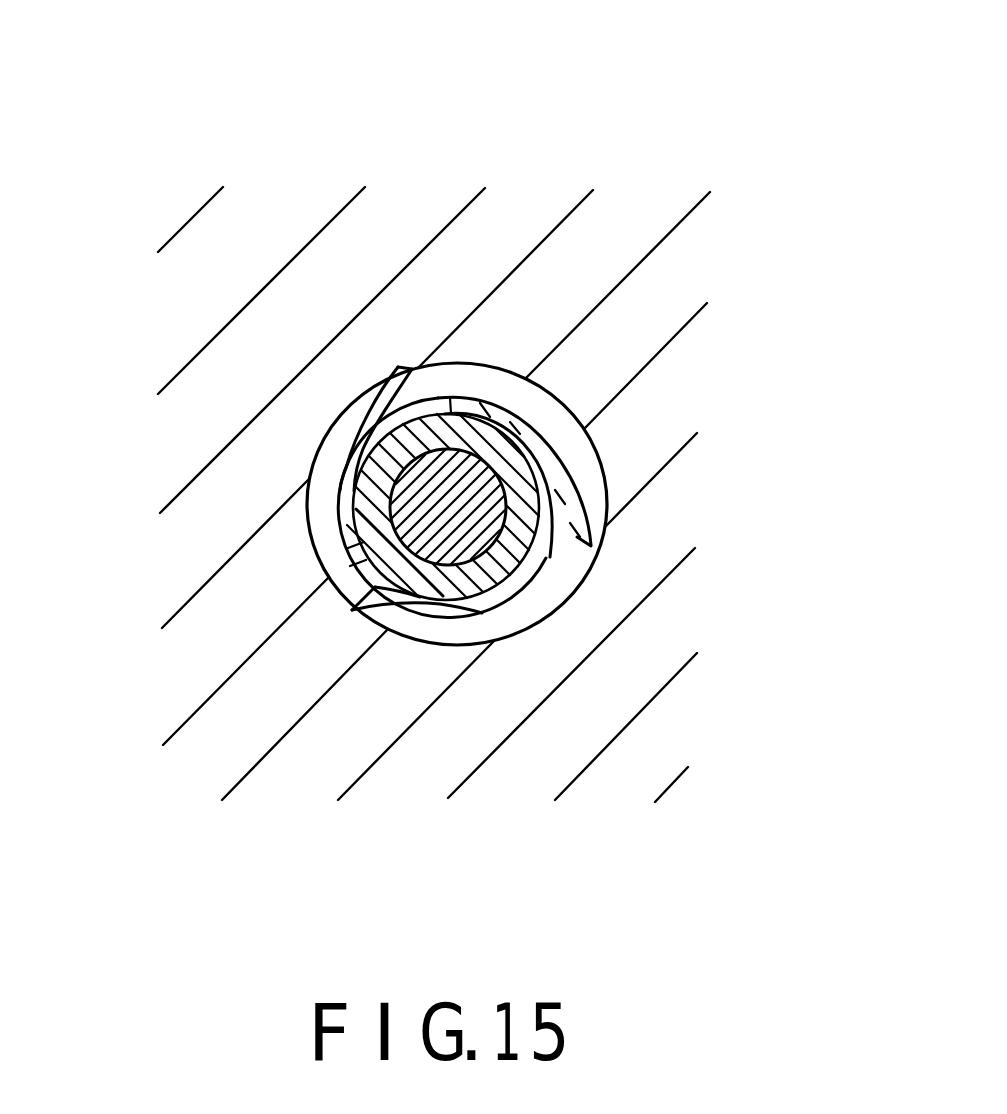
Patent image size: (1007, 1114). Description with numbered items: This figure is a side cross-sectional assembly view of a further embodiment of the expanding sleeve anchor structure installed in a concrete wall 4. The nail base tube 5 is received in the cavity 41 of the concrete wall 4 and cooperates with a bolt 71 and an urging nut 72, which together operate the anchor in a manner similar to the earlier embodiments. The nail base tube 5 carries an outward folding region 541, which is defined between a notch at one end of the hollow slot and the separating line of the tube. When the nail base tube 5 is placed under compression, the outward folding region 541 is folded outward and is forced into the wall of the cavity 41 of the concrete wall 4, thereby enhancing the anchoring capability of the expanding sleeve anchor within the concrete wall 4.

The concrete wall 4 is at (525, 208).
The cavity 41 is at (550, 405).
The nail base tube 5 is at (317, 534).
The outward folding region 541 is at (390, 393).
The urging nut 72 is at (522, 477).
The bolt 71 is at (487, 530).